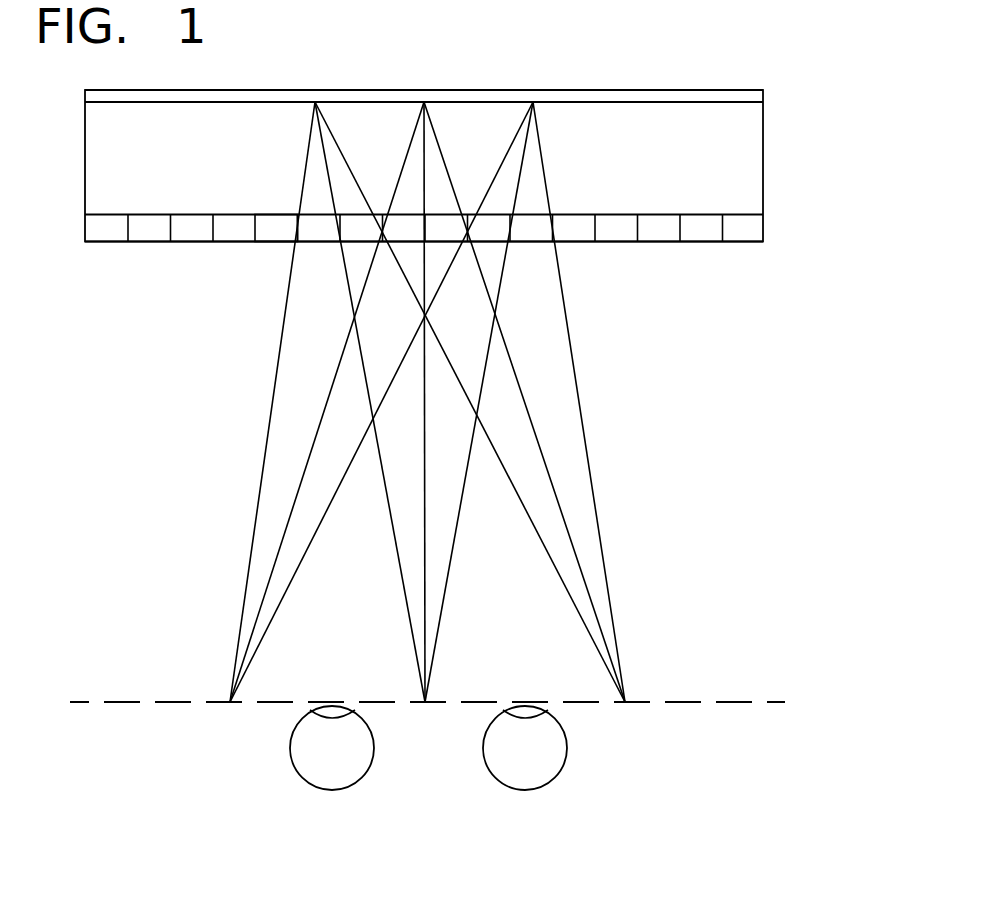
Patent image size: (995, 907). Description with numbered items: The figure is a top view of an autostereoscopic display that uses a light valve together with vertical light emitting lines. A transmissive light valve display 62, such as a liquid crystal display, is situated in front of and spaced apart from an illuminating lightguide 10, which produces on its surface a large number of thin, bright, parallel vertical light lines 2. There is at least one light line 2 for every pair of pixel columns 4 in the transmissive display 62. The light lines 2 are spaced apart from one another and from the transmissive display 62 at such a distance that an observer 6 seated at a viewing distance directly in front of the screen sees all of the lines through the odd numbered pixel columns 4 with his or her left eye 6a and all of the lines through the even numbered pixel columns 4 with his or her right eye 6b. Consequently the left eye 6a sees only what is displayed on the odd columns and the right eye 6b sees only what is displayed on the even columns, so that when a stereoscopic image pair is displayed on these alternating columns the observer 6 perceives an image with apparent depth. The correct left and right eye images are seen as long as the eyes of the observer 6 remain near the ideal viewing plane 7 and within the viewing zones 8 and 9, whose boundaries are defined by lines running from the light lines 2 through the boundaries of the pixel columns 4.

The light line 2 is at (427, 88).
The illuminating lightguide 10 is at (513, 85).
The pixel column 4 is at (528, 232).
The transmissive light valve display 62 is at (267, 247).
The viewing zone 8 is at (381, 402).
The viewing zone 9 is at (470, 402).
The ideal viewing plane 7 is at (680, 702).
The observer 6 is at (431, 788).
The left eye 6a is at (288, 747).
The right eye 6b is at (570, 737).